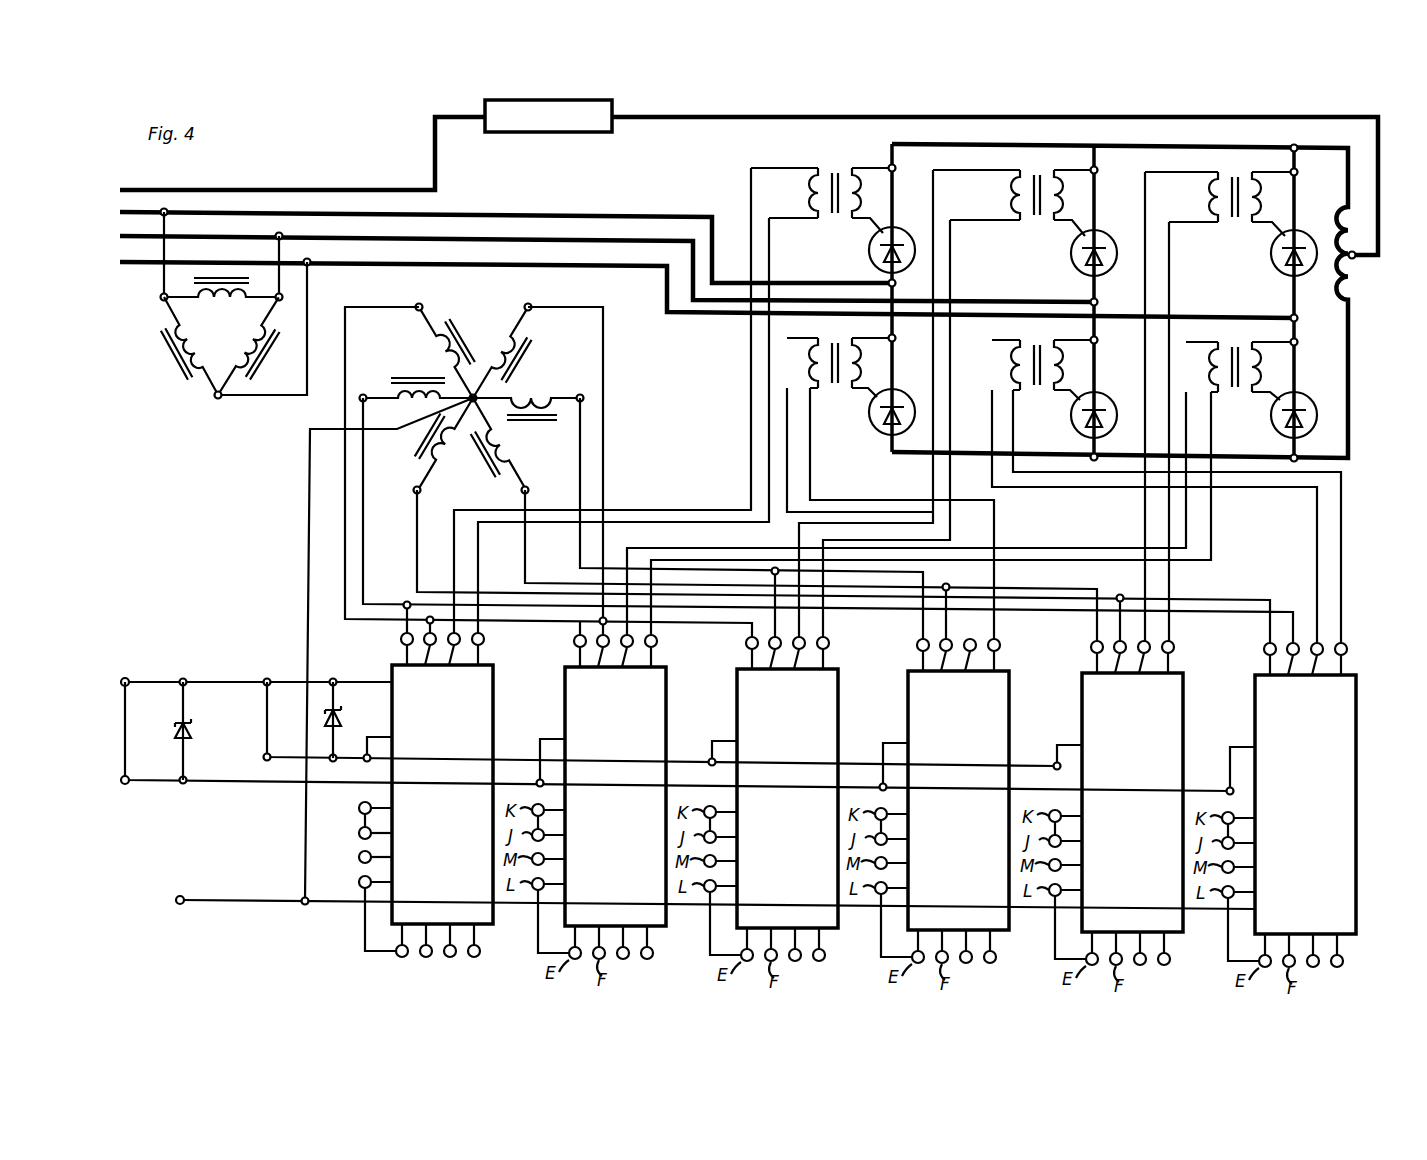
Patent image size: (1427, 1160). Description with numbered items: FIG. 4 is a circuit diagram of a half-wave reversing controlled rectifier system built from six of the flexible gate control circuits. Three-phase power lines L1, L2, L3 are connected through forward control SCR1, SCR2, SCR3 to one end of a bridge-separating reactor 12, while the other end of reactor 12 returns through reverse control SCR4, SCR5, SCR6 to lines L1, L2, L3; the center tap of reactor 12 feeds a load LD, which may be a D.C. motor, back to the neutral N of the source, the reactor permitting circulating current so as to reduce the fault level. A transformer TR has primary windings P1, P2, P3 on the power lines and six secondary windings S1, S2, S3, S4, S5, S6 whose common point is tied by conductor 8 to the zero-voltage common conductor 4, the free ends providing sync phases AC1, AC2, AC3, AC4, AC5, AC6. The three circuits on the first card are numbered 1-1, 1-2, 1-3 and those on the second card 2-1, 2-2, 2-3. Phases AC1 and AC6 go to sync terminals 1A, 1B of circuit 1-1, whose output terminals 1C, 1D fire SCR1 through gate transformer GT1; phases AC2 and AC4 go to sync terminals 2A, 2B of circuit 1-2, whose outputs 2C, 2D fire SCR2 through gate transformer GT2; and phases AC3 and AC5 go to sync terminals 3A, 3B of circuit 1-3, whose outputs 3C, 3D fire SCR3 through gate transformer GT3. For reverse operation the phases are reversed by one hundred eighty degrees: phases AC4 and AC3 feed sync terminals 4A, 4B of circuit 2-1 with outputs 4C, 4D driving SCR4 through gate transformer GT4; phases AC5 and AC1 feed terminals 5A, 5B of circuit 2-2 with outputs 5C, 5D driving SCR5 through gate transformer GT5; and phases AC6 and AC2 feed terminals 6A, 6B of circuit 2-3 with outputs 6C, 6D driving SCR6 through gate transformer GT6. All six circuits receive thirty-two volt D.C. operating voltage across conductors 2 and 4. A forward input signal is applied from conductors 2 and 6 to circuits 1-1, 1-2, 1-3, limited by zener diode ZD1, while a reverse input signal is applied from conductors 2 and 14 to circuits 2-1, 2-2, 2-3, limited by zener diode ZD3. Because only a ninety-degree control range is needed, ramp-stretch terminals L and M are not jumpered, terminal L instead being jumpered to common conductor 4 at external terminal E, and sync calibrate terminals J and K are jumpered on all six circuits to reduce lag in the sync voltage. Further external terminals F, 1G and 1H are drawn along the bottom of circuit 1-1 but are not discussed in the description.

The supply conductor 2 is at (232, 682).
The common conductor 4 is at (258, 900).
The forward input conductor 6 is at (296, 760).
The conductor 8 is at (309, 526).
The reactor 12 is at (1358, 262).
The reverse input conductor 14 is at (178, 780).
The neutral N is at (289, 159).
The power line L1 is at (489, 243).
The power line L2 is at (590, 265).
The power line L3 is at (690, 286).
The load LD is at (540, 132).
The primary winding P1 is at (236, 302).
The primary winding P2 is at (273, 354).
The primary winding P3 is at (166, 356).
The transformer TR is at (349, 295).
The secondary winding S1 is at (406, 406).
The secondary winding S2 is at (492, 348).
The secondary winding S3 is at (514, 442).
The secondary winding S4 is at (528, 406).
The secondary winding S5 is at (457, 446).
The secondary winding S6 is at (430, 350).
The sync phase AC1 is at (364, 394).
The sync phase AC2 is at (530, 304).
The sync phase AC3 is at (536, 484).
The sync phase AC4 is at (580, 394).
The sync phase AC5 is at (410, 496).
The sync phase AC6 is at (424, 304).
The gate transformer GT1 is at (824, 152).
The gate transformer GT2 is at (1024, 156).
The gate transformer GT3 is at (1238, 156).
The gate transformer GT4 is at (838, 328).
The gate transformer GT5 is at (1022, 330).
The gate transformer GT6 is at (1236, 332).
The forward control SCR SCR1 is at (869, 250).
The forward control SCR SCR2 is at (1071, 251).
The forward control SCR SCR3 is at (1272, 256).
The reverse control SCR SCR4 is at (876, 428).
The reverse control SCR SCR5 is at (1078, 430).
The reverse control SCR SCR6 is at (1280, 430).
The zener diode ZD1 is at (335, 720).
The zener diode ZD3 is at (194, 722).
The gate control circuit 1-1 is at (442, 794).
The gate control circuit 2-3 is at (615, 796).
The gate control circuit 1-2 is at (787, 798).
The gate control circuit 2-1 is at (958, 800).
The gate control circuit 1-3 is at (1132, 802).
The gate control circuit 2-2 is at (1305, 804).
The sync terminal 1A is at (401, 642).
The sync terminal 1B is at (422, 663).
The output terminal 1C is at (454, 663).
The output terminal 1D is at (484, 641).
The sync terminal 6A is at (574, 644).
The sync terminal 6B is at (595, 665).
The output terminal 6C is at (627, 665).
The output terminal 6D is at (657, 643).
The sync terminal 2A is at (746, 646).
The sync terminal 2B is at (767, 667).
The output terminal 2C is at (799, 667).
The output terminal 2D is at (829, 645).
The sync terminal 4A is at (917, 648).
The sync terminal 4B is at (938, 669).
The output terminal 4C is at (970, 669).
The output terminal 4D is at (1000, 647).
The sync terminal 3A is at (1091, 650).
The sync terminal 3B is at (1112, 671).
The output terminal 3C is at (1144, 671).
The output terminal 3D is at (1174, 649).
The sync terminal 5A is at (1264, 652).
The sync terminal 5B is at (1285, 673).
The output terminal 5C is at (1317, 673).
The output terminal 5D is at (1347, 651).
The sync calibrate terminal K is at (359, 808).
The sync calibrate terminal J is at (359, 833).
The external terminal M is at (359, 857).
The external terminal L is at (359, 882).
The external terminal E is at (396, 958).
The module terminal F is at (426, 958).
The module terminal 1G is at (450, 958).
The module terminal 1H is at (474, 958).